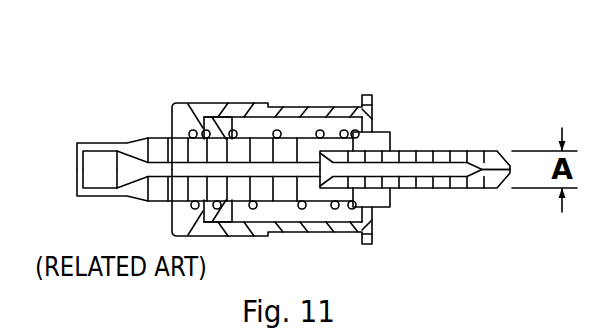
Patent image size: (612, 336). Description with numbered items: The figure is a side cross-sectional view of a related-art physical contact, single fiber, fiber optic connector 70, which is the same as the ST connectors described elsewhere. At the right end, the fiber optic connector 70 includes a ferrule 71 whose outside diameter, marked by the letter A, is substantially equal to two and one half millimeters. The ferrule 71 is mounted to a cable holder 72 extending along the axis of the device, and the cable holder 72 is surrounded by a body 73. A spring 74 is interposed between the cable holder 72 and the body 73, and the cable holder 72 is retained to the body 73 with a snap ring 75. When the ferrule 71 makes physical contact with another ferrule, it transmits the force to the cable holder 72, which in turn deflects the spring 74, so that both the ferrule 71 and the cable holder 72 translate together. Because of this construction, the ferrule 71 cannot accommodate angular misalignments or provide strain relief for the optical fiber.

The fiber optic connector 70 is at (441, 50).
The ferrule 71 is at (450, 151).
The cable holder 72 is at (140, 138).
The body 73 is at (237, 103).
The spring 74 is at (318, 130).
The snap ring 75 is at (202, 139).